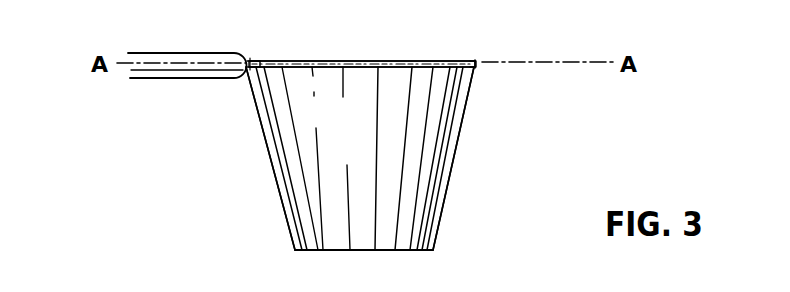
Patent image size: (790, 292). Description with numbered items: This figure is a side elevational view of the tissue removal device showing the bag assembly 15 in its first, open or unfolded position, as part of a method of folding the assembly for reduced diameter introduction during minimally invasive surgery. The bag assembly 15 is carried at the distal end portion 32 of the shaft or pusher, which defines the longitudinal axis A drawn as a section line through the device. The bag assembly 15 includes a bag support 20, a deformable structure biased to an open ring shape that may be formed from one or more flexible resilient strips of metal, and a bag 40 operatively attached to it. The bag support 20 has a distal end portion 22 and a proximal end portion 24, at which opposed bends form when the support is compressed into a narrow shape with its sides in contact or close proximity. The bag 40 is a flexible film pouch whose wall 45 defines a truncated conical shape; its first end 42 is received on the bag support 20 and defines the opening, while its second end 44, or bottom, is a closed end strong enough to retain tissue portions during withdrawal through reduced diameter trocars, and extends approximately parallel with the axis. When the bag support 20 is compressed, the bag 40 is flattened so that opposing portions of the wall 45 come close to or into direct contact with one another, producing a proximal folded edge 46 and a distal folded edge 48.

The bag assembly 15 is at (507, 52).
The bag support 20 is at (377, 61).
The distal end portion 22 is at (477, 60).
The proximal end portion 24 is at (263, 60).
The distal end portion 32 is at (250, 58).
The bag 40 is at (458, 123).
The first end 42 is at (431, 74).
The second end 44 is at (362, 251).
The wall 45 is at (408, 194).
The proximal folded edge 46 is at (260, 120).
The distal folded edge 48 is at (453, 147).